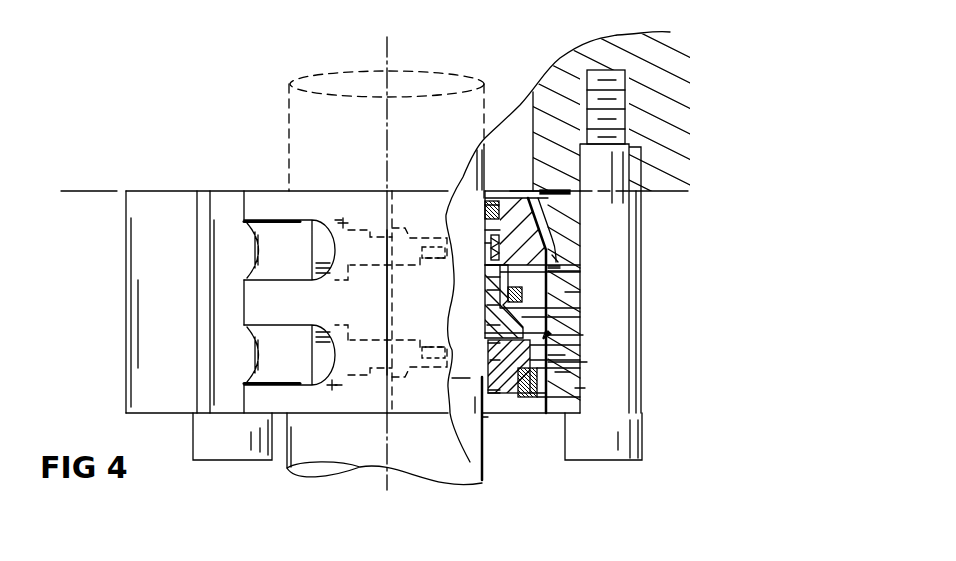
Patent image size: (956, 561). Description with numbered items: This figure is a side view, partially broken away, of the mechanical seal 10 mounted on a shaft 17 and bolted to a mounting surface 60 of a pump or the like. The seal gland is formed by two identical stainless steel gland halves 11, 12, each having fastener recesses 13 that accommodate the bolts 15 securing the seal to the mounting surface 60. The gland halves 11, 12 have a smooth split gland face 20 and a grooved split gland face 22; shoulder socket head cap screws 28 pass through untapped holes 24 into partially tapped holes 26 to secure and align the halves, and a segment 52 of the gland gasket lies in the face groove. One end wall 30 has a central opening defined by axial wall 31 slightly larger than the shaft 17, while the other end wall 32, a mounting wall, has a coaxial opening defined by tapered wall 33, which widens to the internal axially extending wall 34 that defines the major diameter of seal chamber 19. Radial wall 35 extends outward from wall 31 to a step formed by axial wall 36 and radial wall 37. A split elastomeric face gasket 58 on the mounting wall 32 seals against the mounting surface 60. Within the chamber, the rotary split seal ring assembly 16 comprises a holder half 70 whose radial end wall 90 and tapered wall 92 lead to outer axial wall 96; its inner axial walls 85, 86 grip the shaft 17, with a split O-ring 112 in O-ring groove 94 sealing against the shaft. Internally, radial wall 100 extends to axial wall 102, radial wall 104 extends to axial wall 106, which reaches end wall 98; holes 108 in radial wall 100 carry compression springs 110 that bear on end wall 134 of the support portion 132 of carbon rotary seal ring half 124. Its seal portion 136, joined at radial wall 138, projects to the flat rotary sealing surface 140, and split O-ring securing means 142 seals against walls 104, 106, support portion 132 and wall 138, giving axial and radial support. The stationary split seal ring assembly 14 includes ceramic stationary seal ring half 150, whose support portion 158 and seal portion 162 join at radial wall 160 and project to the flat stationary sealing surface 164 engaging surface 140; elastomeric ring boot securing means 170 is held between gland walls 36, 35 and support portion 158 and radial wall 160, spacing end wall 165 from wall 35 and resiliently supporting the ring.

The mechanical seal 10 is at (122, 314).
The gland half 11 is at (643, 217).
The gland half 12 is at (130, 236).
The fastener recess 13 is at (200, 405).
The stationary split seal ring assembly 14 is at (452, 378).
The bolt 15 is at (207, 455).
The rotary split seal ring assembly 16 is at (485, 305).
The shaft 17 is at (483, 470).
The seal chamber 19 is at (583, 335).
The smooth split gland face 20 is at (387, 300).
The grooved split gland face 22 is at (392, 292).
The untapped hole 24 is at (355, 304).
The partially tapped hole 26 is at (405, 302).
The shoulder socket head cap screw 28 is at (318, 252).
The end wall 30 is at (140, 414).
The axial wall 31 is at (490, 413).
The mounting wall 32 is at (160, 190).
The tapered wall 33 is at (560, 227).
The internal axially extending wall 34 is at (553, 325).
The radial wall 35 is at (518, 413).
The axial wall 36 is at (529, 413).
The radial wall 37 is at (563, 372).
The gland gasket segment 52 is at (422, 302).
The face gasket 58 is at (552, 187).
The mounting surface 60 is at (672, 192).
The holder half 70 is at (580, 271).
The inner axial wall 85 is at (486, 233).
The inner axial wall 86 is at (483, 202).
The radial end wall 90 is at (517, 188).
The tapered wall 92 is at (545, 228).
The O-ring groove 94 is at (485, 209).
The outer axial wall 96 is at (555, 258).
The end wall 98 is at (538, 328).
The radial wall 100 is at (488, 243).
The axial wall 102 is at (487, 277).
The radial wall 104 is at (516, 288).
The axial wall 106 is at (487, 290).
The hole 108 is at (500, 238).
The compression spring 110 is at (556, 266).
The split O-ring 112 is at (491, 200).
The rotary seal ring half 124 is at (640, 302).
The support portion 132 is at (556, 268).
The end wall 134 is at (487, 265).
The seal portion 136 is at (487, 325).
The radial wall 138 is at (487, 305).
The rotary sealing surface 140 is at (490, 360).
The split O-ring securing means 142 is at (573, 292).
The stationary seal ring half 150 is at (587, 362).
The support portion 158 is at (488, 390).
The radial wall 160 is at (537, 380).
The seal portion 162 is at (557, 355).
The stationary sealing surface 164 is at (488, 343).
The end wall 165 is at (482, 417).
The elastomeric ring boot securing means 170 is at (582, 388).